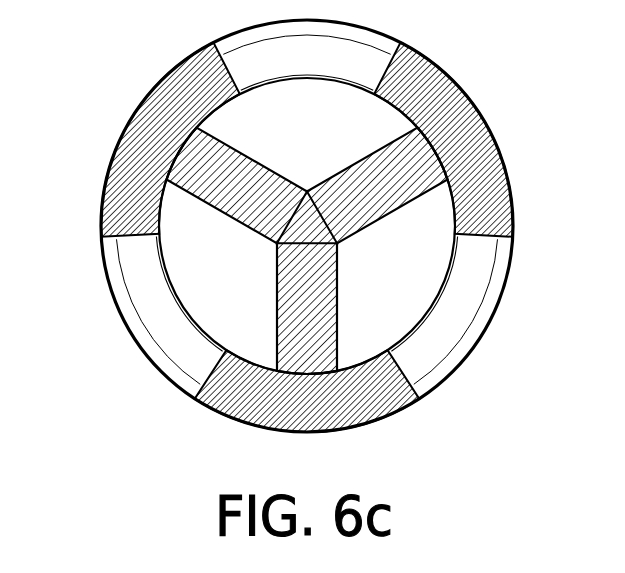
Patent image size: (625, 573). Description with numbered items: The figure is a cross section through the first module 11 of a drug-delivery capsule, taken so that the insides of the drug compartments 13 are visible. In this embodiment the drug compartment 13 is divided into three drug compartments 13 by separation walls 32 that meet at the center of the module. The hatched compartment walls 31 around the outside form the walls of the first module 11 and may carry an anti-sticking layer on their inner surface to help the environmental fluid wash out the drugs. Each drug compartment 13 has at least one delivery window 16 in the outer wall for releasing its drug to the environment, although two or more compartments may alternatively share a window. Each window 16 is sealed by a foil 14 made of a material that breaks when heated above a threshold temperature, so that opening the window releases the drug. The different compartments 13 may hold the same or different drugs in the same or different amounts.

The first module 11 is at (104, 66).
The drug compartment 13 is at (320, 139).
The foil 14 is at (122, 298).
The window 16 is at (162, 330).
The compartment walls 31 is at (490, 182).
The separation wall 32 is at (197, 155).